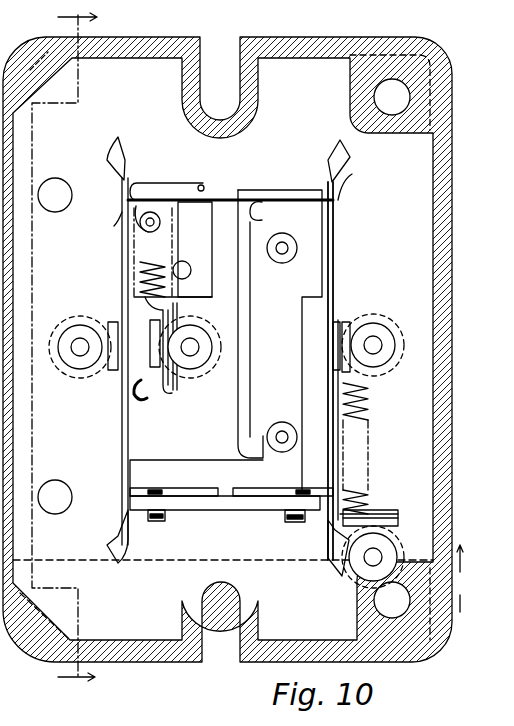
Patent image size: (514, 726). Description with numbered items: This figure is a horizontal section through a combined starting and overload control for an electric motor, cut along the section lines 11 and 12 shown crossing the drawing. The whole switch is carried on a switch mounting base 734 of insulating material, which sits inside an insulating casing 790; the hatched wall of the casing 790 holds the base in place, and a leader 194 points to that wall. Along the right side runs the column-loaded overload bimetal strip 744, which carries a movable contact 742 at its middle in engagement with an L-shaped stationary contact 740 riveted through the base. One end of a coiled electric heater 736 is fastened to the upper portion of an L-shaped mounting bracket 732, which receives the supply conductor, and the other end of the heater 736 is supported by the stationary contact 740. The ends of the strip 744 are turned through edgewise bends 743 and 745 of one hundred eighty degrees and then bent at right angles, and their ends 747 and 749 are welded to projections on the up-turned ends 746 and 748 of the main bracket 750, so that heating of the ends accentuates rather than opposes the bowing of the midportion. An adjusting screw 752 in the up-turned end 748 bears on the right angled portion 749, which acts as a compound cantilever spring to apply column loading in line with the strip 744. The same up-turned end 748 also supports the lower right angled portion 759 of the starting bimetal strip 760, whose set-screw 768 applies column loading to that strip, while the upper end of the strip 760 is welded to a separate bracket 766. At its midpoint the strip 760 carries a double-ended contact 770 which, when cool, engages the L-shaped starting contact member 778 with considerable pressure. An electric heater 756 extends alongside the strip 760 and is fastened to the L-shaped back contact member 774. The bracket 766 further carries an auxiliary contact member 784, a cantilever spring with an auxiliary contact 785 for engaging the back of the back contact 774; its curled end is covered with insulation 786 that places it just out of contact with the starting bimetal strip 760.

The casing 790 is at (153, 40).
The insulating wall 194 is at (43, 92).
The section line 11- 11 is at (64, 348).
The section line 12- 12 is at (461, 578).
The starting bimetal strip 760 is at (127, 447).
The switch mounting base 734 is at (118, 536).
The bimetal strip 744 is at (335, 218).
The edgewise bend 743 is at (343, 124).
The edgewise bend 745 is at (341, 565).
The welded end 747 is at (258, 198).
The up-turned end 746 is at (305, 198).
The main bracket 750 is at (252, 393).
The bracket 766 is at (222, 192).
The electric heater 756 is at (146, 200).
The auxiliary contact member 784 is at (180, 303).
The back contact member 774 is at (167, 393).
The insulation 786 is at (140, 401).
The starting contact member 778 is at (108, 322).
The double-ended contact 770 is at (115, 372).
The auxiliary contact 785 is at (198, 332).
The movable contact 742 is at (343, 322).
The stationary contact 740 is at (352, 330).
The coiled electric heater 736 is at (370, 412).
The L-shaped mounting bracket 732 is at (397, 514).
The up-turned end 748 is at (225, 512).
The right angled portion 759 is at (192, 488).
The right angled portion 749 is at (242, 490).
The set-screw 768 is at (154, 522).
The adjusting screw 752 is at (282, 523).